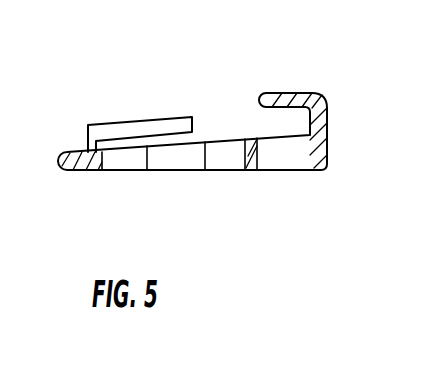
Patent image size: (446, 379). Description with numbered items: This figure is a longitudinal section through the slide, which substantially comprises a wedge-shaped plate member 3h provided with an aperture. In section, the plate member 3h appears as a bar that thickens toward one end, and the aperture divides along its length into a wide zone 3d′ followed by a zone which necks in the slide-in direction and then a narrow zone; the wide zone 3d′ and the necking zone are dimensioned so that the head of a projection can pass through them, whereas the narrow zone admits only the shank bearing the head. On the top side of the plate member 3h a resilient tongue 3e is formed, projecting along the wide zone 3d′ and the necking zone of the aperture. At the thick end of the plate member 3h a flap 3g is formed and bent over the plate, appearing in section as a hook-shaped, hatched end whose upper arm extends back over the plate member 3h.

The resilient tongue 3e is at (112, 130).
The flap 3g is at (293, 99).
The wedge-shaped plate member 3h is at (68, 170).
The wide zone 3d′ is at (120, 150).